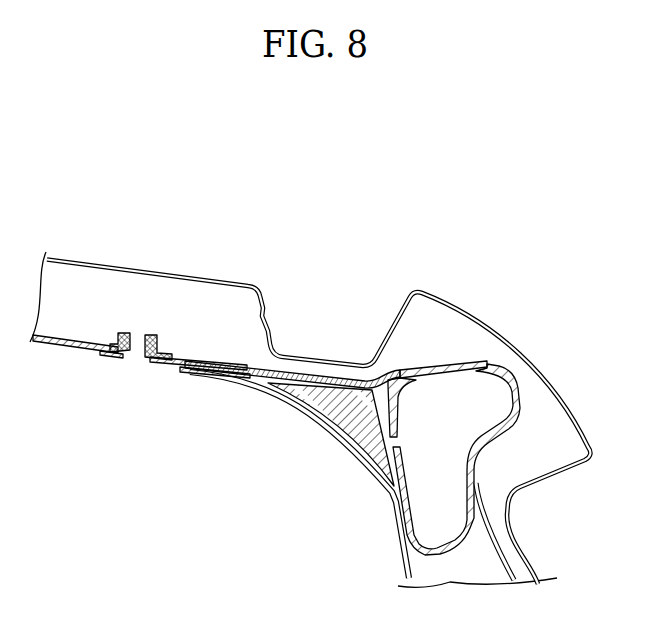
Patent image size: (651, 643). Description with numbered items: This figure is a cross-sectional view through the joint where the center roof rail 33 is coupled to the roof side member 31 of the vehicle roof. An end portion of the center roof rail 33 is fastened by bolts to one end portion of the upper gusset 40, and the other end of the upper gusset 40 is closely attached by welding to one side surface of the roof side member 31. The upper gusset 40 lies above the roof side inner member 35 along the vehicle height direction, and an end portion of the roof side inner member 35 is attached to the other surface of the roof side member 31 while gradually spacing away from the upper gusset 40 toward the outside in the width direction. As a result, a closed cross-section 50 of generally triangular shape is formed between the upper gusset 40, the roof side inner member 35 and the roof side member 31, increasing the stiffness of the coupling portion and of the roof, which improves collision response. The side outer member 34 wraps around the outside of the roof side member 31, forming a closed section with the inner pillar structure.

The roof side member 31 is at (452, 554).
The center roof rail 33 is at (58, 352).
The side outer member 34 is at (498, 320).
The roof side inner member 35 is at (292, 403).
The upper gusset 40 is at (293, 380).
The closed cross-section 50 is at (347, 462).